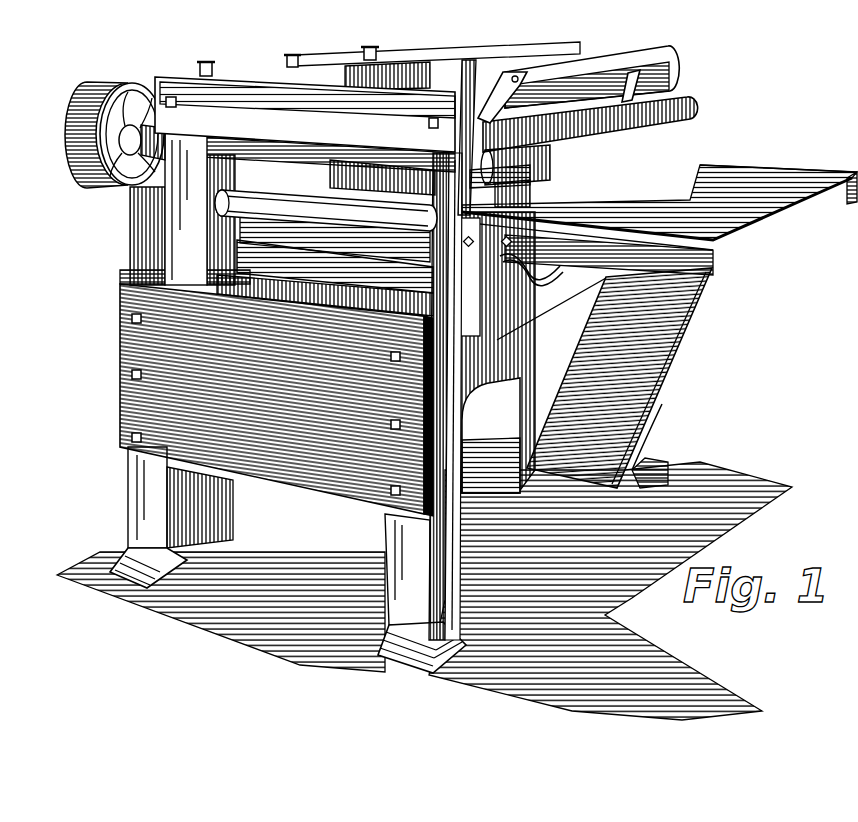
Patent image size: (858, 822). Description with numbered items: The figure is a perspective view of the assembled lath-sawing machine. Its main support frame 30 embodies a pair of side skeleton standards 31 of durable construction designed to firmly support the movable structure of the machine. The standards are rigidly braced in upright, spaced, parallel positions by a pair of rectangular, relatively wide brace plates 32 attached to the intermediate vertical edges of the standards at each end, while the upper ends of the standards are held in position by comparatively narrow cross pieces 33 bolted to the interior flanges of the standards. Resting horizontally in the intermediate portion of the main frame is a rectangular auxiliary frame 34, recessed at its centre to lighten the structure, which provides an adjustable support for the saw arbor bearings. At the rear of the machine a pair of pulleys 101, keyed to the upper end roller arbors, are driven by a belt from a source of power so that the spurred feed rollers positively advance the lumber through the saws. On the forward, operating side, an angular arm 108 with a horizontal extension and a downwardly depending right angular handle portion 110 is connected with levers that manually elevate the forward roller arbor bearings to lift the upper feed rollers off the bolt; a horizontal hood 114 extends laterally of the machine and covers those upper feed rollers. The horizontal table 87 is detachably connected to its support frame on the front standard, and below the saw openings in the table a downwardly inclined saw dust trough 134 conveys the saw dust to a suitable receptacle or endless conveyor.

The pulleys 101 is at (83, 113).
The cross pieces 33 is at (192, 93).
The side skeleton standards 31 is at (320, 72).
The angular arm 108 is at (557, 73).
The handle portion 110 is at (679, 82).
The hood 114 is at (682, 110).
The table 87 is at (727, 172).
The saw dust trough 134 is at (642, 374).
The brace plates 32 is at (157, 391).
The auxiliary frame 34 is at (277, 289).
The main support frame 30 is at (413, 499).